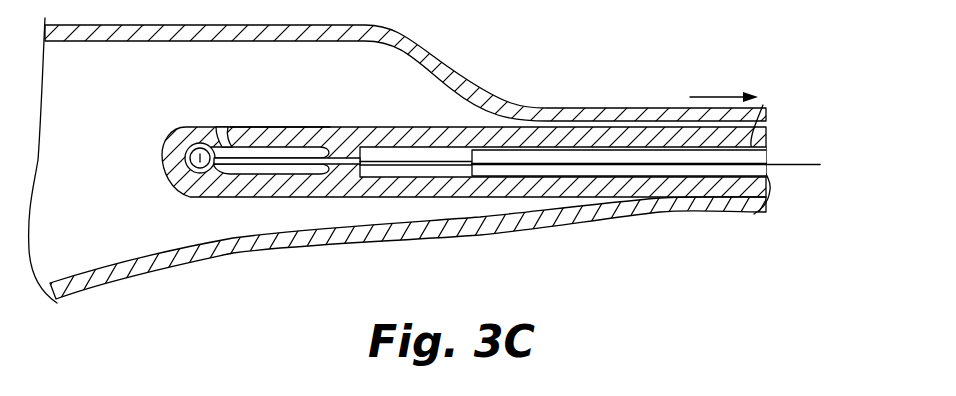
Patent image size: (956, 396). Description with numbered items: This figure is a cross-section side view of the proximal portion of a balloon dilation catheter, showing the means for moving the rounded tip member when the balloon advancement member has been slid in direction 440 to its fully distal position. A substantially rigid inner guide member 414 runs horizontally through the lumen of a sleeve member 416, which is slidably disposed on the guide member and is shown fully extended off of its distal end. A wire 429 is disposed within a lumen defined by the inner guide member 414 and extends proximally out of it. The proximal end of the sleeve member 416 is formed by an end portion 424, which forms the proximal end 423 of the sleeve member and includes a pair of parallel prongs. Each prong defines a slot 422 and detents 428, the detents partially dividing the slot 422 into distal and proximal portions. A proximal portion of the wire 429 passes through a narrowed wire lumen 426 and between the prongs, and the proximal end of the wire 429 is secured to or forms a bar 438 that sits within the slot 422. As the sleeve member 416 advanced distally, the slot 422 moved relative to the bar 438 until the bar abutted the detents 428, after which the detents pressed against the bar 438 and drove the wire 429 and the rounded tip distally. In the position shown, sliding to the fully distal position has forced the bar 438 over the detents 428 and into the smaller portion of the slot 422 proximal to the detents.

The substantially rigid inner guide member 414 is at (567, 148).
The sleeve member 416 is at (605, 196).
The slot 422 is at (266, 166).
The proximal end 423 is at (264, 127).
The end portion 424 is at (367, 113).
The narrowed wire lumen 426 is at (348, 178).
The detents 428 is at (226, 127).
The wire 429 is at (800, 164).
The bar 438 is at (181, 183).
The direction 440 is at (724, 83).